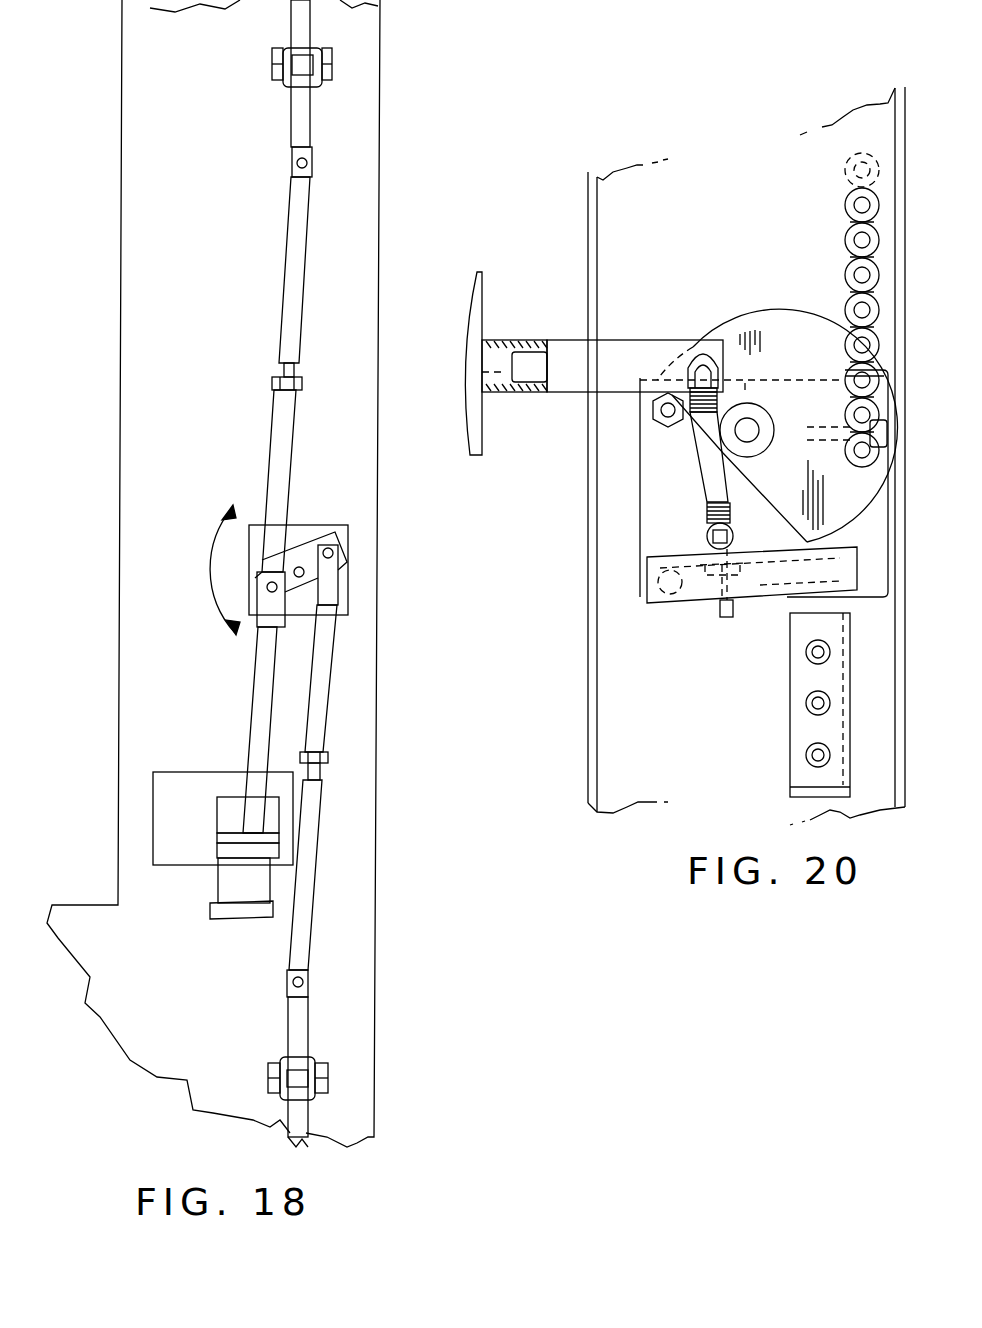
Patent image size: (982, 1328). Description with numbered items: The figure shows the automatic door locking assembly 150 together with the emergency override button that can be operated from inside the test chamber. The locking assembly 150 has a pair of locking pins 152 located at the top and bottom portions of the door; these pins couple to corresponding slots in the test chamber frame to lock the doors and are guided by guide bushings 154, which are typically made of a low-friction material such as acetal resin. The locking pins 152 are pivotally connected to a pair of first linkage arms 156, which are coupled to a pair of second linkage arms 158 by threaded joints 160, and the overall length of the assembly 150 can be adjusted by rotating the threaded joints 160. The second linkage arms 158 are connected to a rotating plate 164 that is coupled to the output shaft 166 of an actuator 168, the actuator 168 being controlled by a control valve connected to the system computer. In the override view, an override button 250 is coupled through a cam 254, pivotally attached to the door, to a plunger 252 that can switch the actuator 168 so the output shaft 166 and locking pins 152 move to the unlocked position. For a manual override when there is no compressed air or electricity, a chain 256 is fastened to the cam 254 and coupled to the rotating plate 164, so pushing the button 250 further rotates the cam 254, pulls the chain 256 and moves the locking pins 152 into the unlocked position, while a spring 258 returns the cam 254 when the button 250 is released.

In FIG. 18, the locking assembly 150 is at (205, 358).
In FIG. 18, the locking pins 152 is at (300, 22).
In FIG. 18, the guide bushings 154 is at (285, 87).
In FIG. 18, the first linkage arms 156 is at (293, 235).
In FIG. 18, the second linkage arms 158 is at (280, 445).
In FIG. 18, the threaded joints 160 is at (297, 378).
In FIG. 18, the rotating plate 164 is at (327, 530).
In FIG. 18, the output shaft 166 is at (267, 695).
In FIG. 18, the actuator 168 is at (225, 890).
In FIG. 20, the override button 250 is at (462, 290).
In FIG. 20, the plunger 252 is at (807, 605).
In FIG. 20, the cam 254 is at (757, 330).
In FIG. 20, the chain 256 is at (845, 213).
In FIG. 20, the spring 258 is at (707, 518).